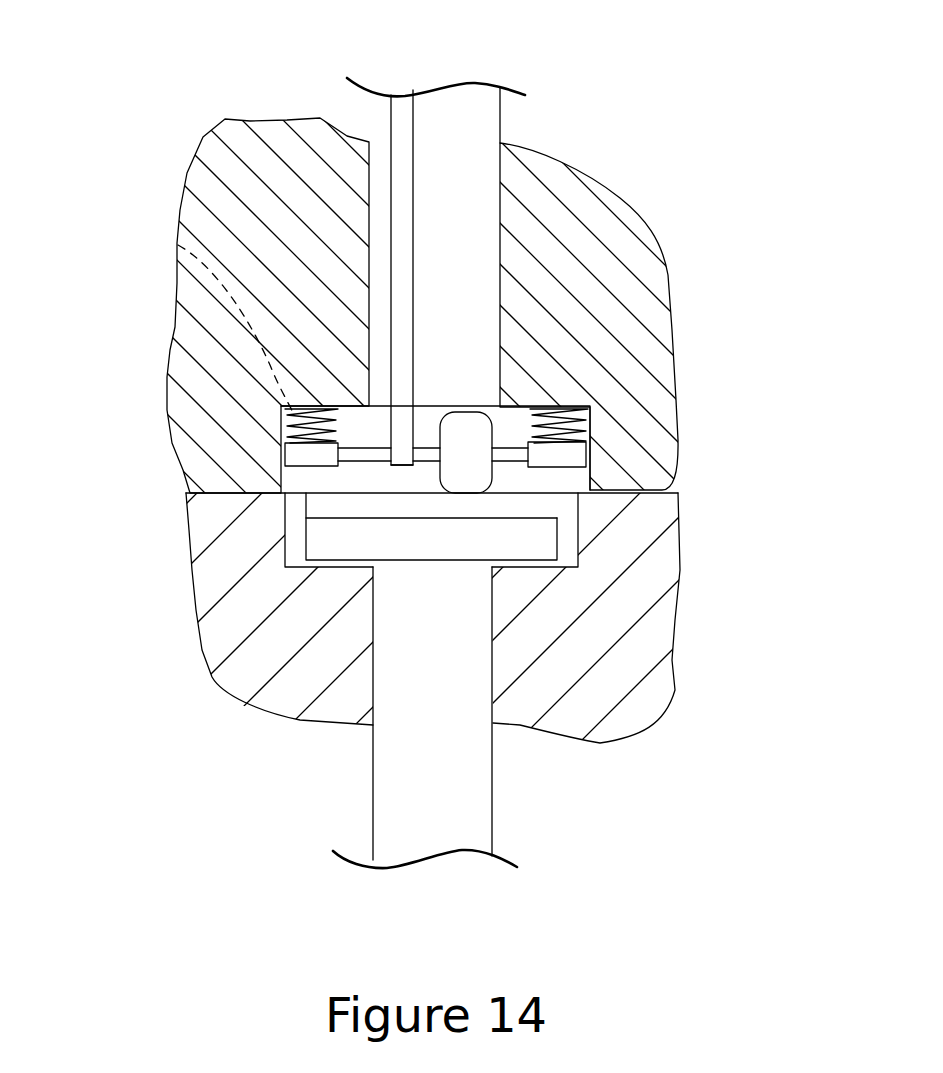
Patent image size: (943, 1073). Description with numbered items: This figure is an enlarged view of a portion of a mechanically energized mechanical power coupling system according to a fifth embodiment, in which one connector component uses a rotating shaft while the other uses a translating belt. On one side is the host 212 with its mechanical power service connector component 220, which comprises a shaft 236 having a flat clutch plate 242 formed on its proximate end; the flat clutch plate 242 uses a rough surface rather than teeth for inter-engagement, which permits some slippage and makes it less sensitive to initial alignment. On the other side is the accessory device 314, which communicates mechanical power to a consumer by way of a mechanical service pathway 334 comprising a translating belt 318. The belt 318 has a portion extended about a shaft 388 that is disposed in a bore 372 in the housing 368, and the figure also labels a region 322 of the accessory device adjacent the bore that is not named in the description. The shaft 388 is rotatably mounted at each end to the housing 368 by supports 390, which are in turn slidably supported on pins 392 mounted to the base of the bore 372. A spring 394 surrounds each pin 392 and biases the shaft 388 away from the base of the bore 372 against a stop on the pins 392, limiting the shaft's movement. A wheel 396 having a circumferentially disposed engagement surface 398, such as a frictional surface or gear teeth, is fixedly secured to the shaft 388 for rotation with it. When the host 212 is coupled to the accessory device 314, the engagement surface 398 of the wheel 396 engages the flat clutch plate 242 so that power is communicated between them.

The host 212 is at (210, 683).
The mechanical power service connector component 220 is at (530, 603).
The shaft 236 is at (425, 752).
The flat clutch plate 242 is at (333, 547).
The accessory device 314 is at (562, 153).
The translating belt 318 is at (402, 132).
The valve cavity 322 is at (551, 387).
The mechanical service pathway 334 is at (468, 118).
The housing 368 is at (605, 210).
The bore 372 is at (575, 405).
The shaft 388 is at (300, 518).
The supports 390 is at (300, 457).
The pin 392 is at (178, 245).
The spring 394 is at (288, 412).
The wheel 396 is at (466, 497).
The engagement surface 398 is at (478, 447).